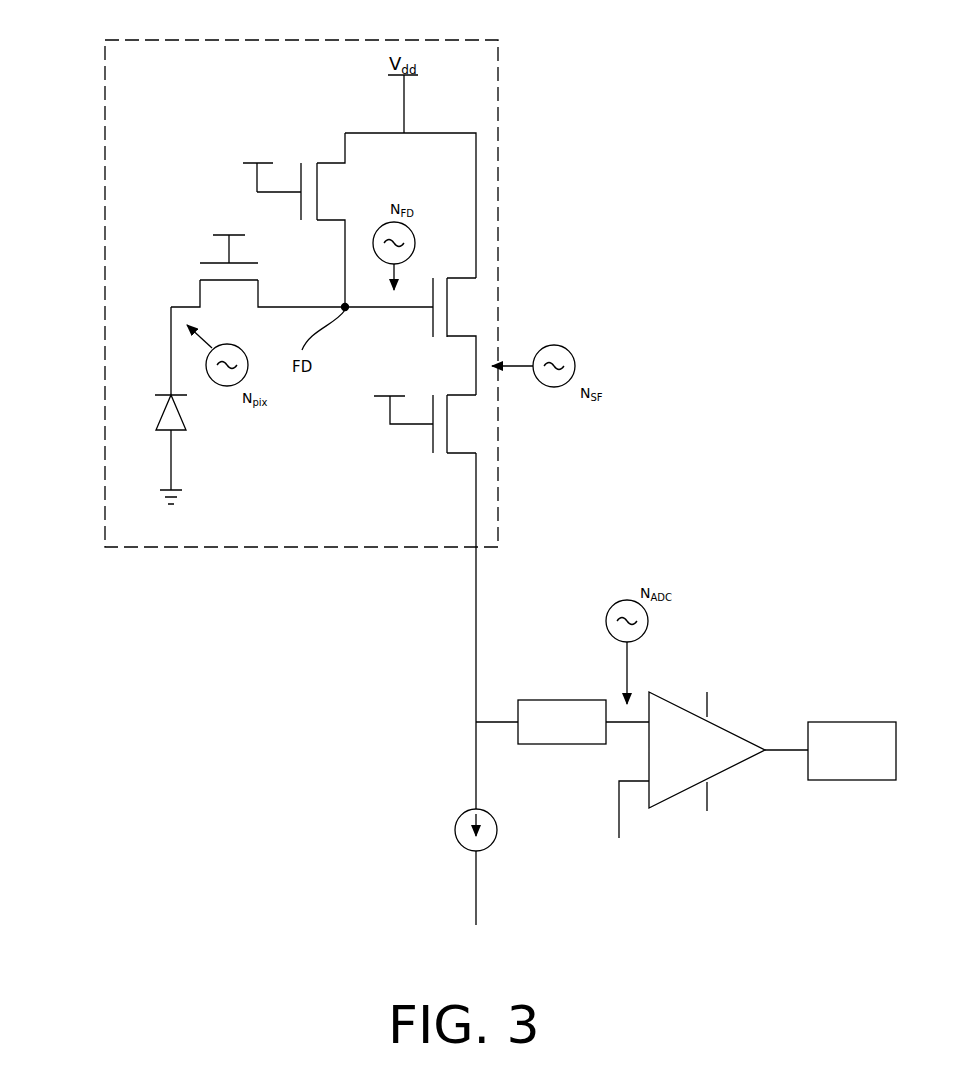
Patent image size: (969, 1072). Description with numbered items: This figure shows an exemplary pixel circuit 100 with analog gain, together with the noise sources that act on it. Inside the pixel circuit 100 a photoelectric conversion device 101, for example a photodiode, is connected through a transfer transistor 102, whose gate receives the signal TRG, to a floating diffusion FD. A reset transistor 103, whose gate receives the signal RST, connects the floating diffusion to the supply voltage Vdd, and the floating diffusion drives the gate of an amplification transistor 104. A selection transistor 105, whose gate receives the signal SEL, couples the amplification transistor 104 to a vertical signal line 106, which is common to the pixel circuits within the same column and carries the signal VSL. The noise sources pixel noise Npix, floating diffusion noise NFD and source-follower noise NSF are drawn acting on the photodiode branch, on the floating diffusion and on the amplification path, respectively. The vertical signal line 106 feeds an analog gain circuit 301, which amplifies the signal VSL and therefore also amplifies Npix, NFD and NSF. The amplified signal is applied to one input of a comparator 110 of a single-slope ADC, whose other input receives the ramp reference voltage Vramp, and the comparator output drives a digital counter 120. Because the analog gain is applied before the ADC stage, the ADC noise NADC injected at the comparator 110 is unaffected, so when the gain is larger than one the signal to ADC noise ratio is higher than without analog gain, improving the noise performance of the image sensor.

The pixel circuit 100 is at (105, 68).
The photoelectric conversion device 101 is at (155, 418).
The transfer transistor 102 is at (200, 287).
The reset transistor 103 is at (317, 163).
The amplification transistor 104 is at (470, 278).
The selection transistor 105 is at (452, 455).
The vertical signal line 106 is at (476, 480).
The comparator 110 is at (665, 693).
The digital counter 120 is at (837, 722).
The analog gain circuit 301 is at (565, 745).